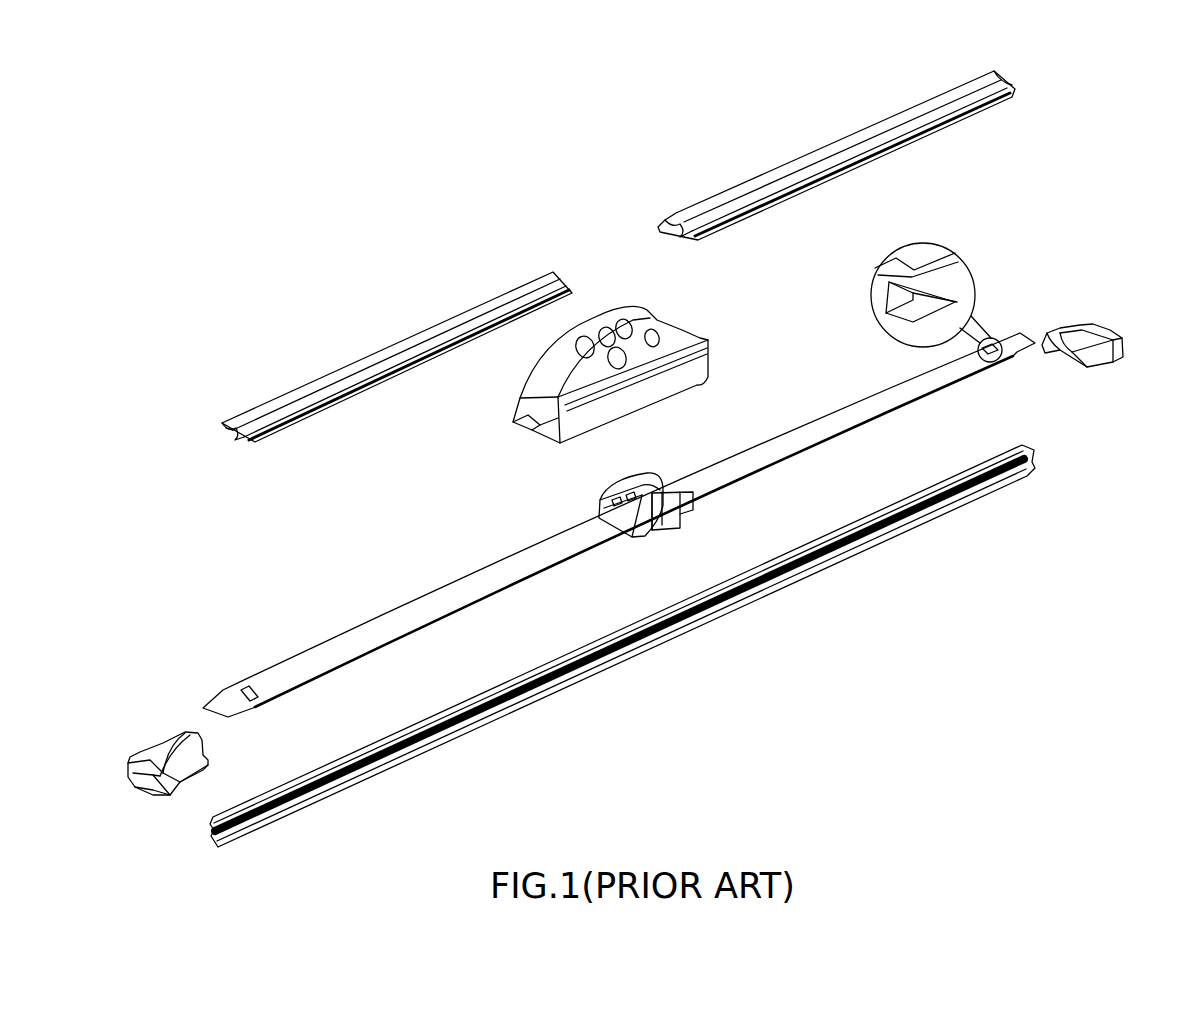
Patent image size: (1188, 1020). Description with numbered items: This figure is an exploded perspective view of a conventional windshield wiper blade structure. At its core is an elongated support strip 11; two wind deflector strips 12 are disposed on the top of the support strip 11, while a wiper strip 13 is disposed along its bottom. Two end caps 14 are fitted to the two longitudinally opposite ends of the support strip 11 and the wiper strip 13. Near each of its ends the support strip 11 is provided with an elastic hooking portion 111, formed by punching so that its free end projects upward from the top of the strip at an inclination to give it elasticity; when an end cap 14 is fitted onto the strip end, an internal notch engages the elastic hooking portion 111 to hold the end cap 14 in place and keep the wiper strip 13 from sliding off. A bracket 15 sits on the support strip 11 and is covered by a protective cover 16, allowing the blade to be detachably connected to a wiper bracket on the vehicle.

The support strip 11 is at (250, 670).
The elastic hooking portion 111 is at (937, 297).
The wind deflector strip 12 is at (993, 86).
The wiper strip 13 is at (551, 690).
The end cap 14 is at (1103, 336).
The bracket 15 is at (648, 479).
The protective cover 16 is at (700, 372).